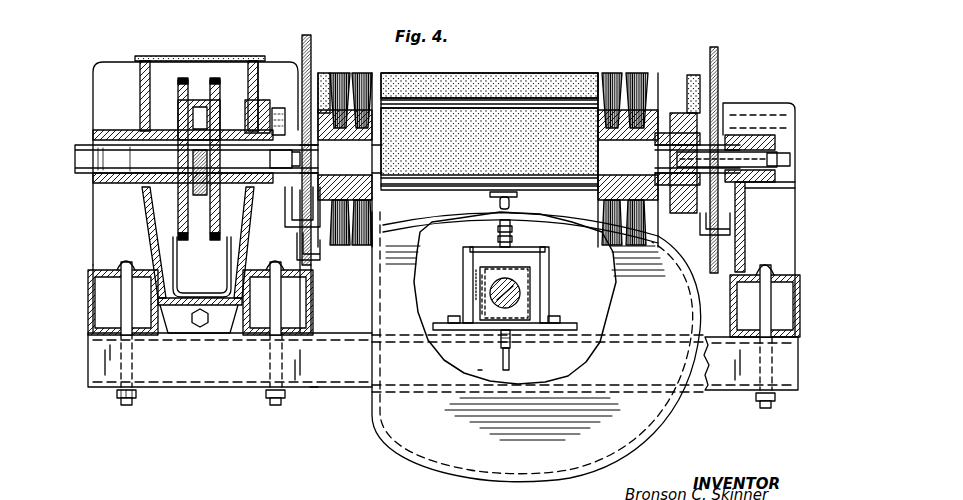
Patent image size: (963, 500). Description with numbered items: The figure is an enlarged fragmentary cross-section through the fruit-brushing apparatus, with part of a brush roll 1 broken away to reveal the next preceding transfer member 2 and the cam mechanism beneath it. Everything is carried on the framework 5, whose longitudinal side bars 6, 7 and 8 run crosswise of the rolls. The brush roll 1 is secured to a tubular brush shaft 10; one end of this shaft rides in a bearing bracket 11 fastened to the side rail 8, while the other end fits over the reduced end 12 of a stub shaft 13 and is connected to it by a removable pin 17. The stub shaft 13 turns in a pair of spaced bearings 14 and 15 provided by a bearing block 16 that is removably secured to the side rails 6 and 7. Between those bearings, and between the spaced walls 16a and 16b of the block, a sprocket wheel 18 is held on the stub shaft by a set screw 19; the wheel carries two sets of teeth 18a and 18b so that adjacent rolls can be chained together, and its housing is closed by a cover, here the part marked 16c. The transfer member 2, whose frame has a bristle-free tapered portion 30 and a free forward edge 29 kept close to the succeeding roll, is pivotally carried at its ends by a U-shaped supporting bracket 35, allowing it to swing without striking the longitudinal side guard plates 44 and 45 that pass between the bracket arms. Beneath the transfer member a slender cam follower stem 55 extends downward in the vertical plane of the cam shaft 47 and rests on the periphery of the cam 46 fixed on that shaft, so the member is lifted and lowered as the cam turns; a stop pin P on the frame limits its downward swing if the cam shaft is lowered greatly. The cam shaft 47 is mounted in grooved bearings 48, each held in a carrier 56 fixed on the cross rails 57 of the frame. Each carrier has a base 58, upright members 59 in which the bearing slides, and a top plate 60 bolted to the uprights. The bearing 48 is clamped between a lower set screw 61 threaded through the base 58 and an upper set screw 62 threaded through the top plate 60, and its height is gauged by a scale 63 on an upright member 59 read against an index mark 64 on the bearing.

The brush roll 1 is at (392, 72).
The transfer member 2 is at (505, 105).
The framework 5 is at (201, 392).
The side bar 6 is at (150, 300).
The side bar 7 is at (313, 298).
The side bar 8 is at (803, 299).
The tubular brush shaft 10 is at (790, 163).
The bearing bracket 11 is at (772, 147).
The reduced end 12 is at (278, 173).
The stub shaft 13 is at (80, 173).
The bearing 14 is at (131, 183).
The bearing 15 is at (251, 185).
The bearing block 16 is at (139, 233).
The wall 16a is at (140, 87).
The wall 16b is at (258, 80).
The housing nut 16c is at (198, 325).
The removable pin 17 is at (296, 218).
The sprocket wheel 18 is at (210, 96).
The set of teeth 18a is at (183, 78).
The set of teeth 18b is at (222, 96).
The set screw 19 is at (193, 186).
The forward edge 29 is at (437, 185).
The tapered portion 30 is at (541, 99).
The U-shaped supporting bracket 35 is at (297, 246).
The side guard plate 44 is at (312, 44).
The side guard plate 45 is at (718, 58).
The cam 46 is at (415, 461).
The cam shaft 47 is at (521, 295).
The bearing 48 is at (532, 278).
The cam follower stem 55 is at (492, 198).
The carrier 56 is at (552, 312).
The cross rail 57 is at (311, 387).
The base 58 is at (490, 331).
The upright member 59 is at (476, 286).
The top plate 60 is at (492, 250).
The set screw 61 is at (508, 372).
The set screw 62 is at (546, 212).
The scale 63 is at (481, 301).
The index mark 64 is at (512, 307).
The pin P is at (301, 278).